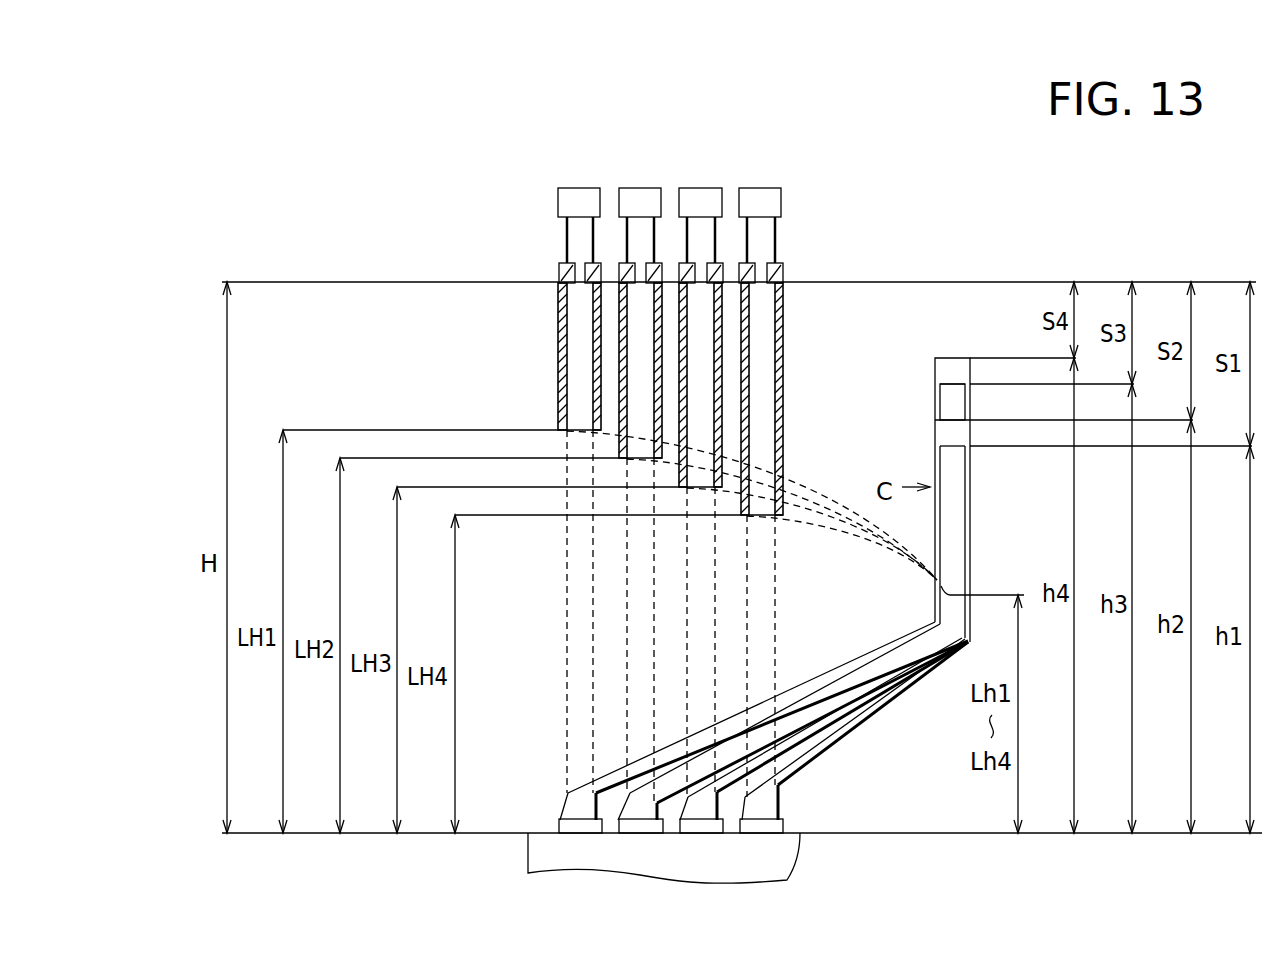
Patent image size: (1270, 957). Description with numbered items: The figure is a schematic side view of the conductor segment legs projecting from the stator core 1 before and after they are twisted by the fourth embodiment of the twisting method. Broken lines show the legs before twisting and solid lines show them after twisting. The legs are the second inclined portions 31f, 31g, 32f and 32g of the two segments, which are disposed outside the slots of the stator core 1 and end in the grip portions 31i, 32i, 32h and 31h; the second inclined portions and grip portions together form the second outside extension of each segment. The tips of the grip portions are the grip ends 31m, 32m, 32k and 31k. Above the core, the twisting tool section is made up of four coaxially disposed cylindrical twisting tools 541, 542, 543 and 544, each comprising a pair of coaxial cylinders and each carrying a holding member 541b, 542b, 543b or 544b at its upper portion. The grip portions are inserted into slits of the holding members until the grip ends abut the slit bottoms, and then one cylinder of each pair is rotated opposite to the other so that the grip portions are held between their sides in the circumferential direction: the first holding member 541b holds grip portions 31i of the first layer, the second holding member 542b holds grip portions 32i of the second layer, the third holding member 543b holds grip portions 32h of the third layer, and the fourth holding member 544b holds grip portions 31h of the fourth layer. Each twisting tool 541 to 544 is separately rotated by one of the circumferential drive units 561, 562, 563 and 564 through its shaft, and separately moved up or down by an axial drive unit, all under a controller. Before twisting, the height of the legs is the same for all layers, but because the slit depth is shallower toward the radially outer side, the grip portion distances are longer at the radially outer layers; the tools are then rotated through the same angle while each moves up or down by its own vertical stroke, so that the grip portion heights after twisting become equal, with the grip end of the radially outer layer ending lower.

The circumferential drive unit 561 is at (579, 196).
The circumferential drive unit 562 is at (641, 195).
The circumferential drive unit 563 is at (700, 195).
The circumferential drive unit 564 is at (762, 195).
The first twisting tool 541 is at (622, 262).
The second twisting tool 542 is at (653, 262).
The third twisting tool 543 is at (688, 262).
The fourth twisting tool 544 is at (717, 262).
The first holding member 541b is at (558, 316).
The second holding member 542b is at (620, 338).
The third holding member 543b is at (680, 363).
The fourth holding member 544b is at (742, 378).
The grip end 31k is at (950, 356).
The grip portion 31h is at (948, 368).
The grip end 32k is at (948, 380).
The grip portion 32h is at (948, 403).
The grip end 32m is at (948, 410).
The grip portion 32i is at (948, 430).
The grip end 31m is at (948, 437).
The grip portion 31i is at (952, 468).
The second inclined portion 31f is at (788, 765).
The second inclined portion 32f is at (790, 735).
The second inclined portion 31g is at (607, 783).
The second inclined portion 32g is at (672, 782).
The stator core 1 is at (778, 862).